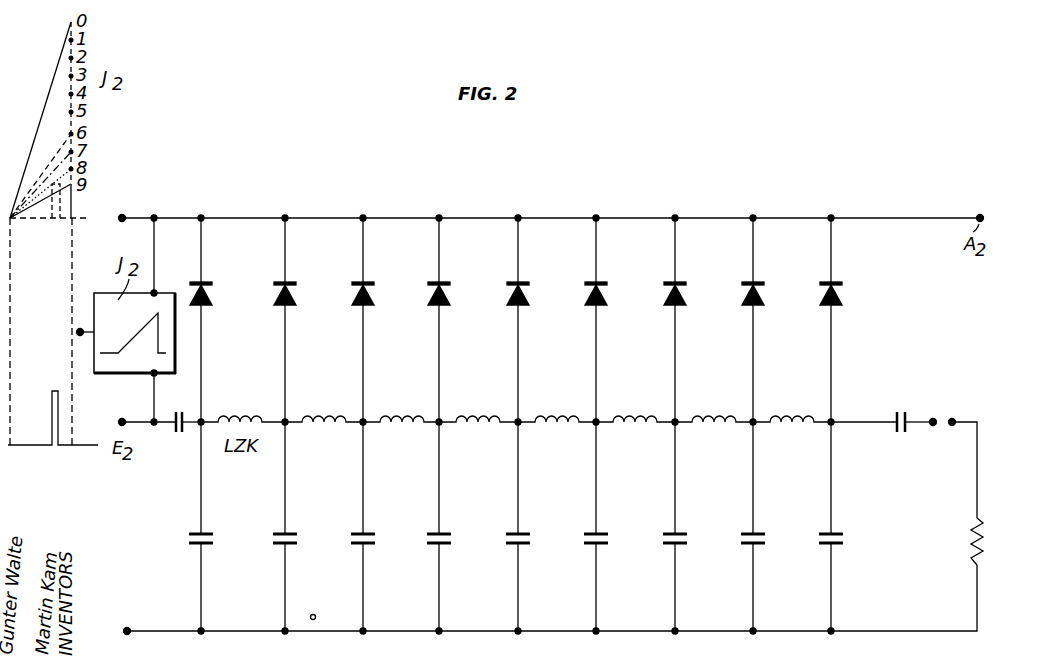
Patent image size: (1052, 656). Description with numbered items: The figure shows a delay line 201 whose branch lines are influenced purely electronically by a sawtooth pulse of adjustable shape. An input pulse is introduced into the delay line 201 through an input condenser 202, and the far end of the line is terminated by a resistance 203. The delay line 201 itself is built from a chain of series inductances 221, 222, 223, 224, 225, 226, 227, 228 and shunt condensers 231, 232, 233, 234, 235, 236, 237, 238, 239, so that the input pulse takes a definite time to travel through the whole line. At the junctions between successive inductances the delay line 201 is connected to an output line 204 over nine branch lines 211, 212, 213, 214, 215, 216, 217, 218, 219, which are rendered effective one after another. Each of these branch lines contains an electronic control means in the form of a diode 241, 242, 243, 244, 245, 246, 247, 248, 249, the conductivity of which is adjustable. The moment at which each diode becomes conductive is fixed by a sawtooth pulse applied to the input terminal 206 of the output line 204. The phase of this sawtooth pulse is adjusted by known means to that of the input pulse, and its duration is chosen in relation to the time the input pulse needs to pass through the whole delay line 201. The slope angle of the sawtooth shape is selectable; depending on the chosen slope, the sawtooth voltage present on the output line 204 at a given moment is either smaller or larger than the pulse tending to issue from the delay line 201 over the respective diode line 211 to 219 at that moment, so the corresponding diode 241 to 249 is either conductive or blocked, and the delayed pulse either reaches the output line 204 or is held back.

The delay line 201 is at (548, 523).
The input condenser 202 is at (184, 433).
The resistance 203 is at (984, 539).
The output line 204 is at (899, 208).
The input terminal 206 is at (122, 216).
The branch line 211 is at (203, 338).
The branch line 212 is at (287, 338).
The branch line 213 is at (365, 338).
The branch line 214 is at (441, 338).
The branch line 215 is at (520, 338).
The branch line 216 is at (598, 338).
The branch line 217 is at (677, 338).
The branch line 218 is at (755, 338).
The branch line 219 is at (833, 338).
The inductance 221 is at (244, 411).
The inductance 222 is at (328, 411).
The inductance 223 is at (406, 411).
The inductance 224 is at (482, 411).
The inductance 225 is at (561, 411).
The inductance 226 is at (639, 411).
The inductance 227 is at (718, 411).
The inductance 228 is at (796, 411).
The condenser 231 is at (206, 545).
The condenser 232 is at (290, 545).
The condenser 233 is at (368, 545).
The condenser 234 is at (444, 545).
The condenser 235 is at (523, 545).
The condenser 236 is at (601, 545).
The condenser 237 is at (680, 545).
The condenser 238 is at (758, 545).
The condenser 239 is at (836, 545).
The diode 241 is at (210, 297).
The diode 242 is at (294, 297).
The diode 243 is at (372, 297).
The diode 244 is at (448, 297).
The diode 245 is at (527, 297).
The diode 246 is at (605, 297).
The diode 247 is at (684, 297).
The diode 248 is at (762, 297).
The diode 249 is at (840, 297).